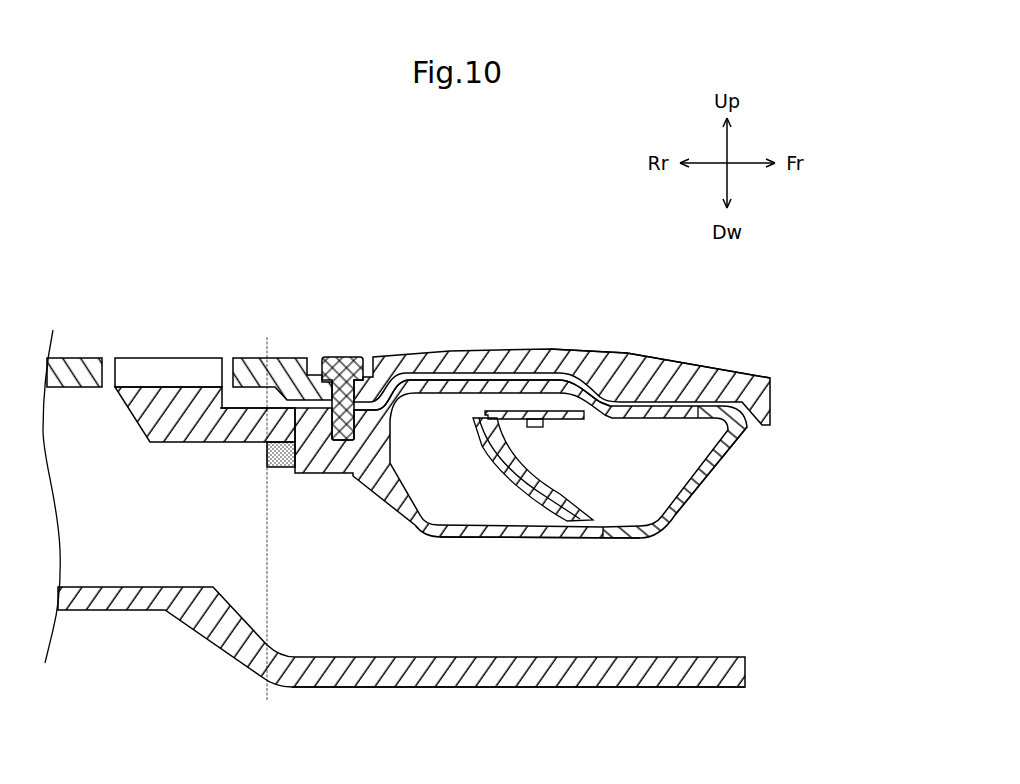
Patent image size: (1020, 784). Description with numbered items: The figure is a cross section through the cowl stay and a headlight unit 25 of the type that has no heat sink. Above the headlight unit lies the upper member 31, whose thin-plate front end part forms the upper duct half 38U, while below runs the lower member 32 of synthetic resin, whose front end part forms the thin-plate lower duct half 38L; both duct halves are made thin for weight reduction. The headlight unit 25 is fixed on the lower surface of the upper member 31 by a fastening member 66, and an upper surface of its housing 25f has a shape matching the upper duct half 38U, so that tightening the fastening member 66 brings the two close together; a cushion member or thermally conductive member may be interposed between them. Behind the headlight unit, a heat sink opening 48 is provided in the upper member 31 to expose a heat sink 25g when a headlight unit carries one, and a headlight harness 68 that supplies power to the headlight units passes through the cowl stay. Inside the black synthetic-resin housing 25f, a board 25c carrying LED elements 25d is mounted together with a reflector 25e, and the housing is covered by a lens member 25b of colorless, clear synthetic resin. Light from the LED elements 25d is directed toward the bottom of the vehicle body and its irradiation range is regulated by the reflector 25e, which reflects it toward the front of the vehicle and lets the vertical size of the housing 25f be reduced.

The heat sink opening 48 is at (109, 357).
The heat sink 25g is at (168, 357).
The fastening member 66 is at (346, 356).
The headlight harness 68 is at (280, 468).
The upper member 31 is at (528, 350).
The upper duct half 38U is at (640, 362).
The headlight unit 25 is at (424, 540).
The housing 25f is at (506, 527).
The lens member 25b is at (675, 520).
The board 25c is at (560, 419).
The LED element 25d is at (535, 427).
The reflector 25e is at (557, 506).
The lower member 32 is at (474, 690).
The lower duct half 38L is at (640, 686).